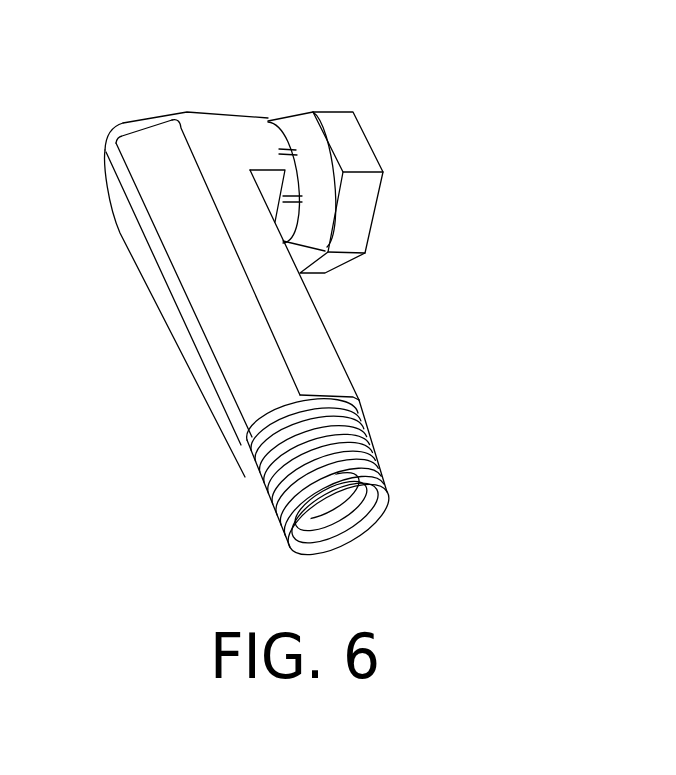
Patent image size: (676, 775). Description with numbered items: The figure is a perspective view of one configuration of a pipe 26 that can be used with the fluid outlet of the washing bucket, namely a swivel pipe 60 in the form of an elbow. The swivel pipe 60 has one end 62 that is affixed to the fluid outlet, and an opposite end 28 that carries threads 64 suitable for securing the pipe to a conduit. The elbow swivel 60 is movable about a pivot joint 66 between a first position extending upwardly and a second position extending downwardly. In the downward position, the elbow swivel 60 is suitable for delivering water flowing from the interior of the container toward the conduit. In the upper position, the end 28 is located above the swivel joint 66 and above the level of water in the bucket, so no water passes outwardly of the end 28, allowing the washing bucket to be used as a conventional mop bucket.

The pipe 26 is at (190, 342).
The opposite end 28 is at (388, 498).
The swivel pipe 60 is at (207, 130).
The one end 62 is at (338, 112).
The threads 64 is at (372, 447).
The pivot joint 66 is at (295, 120).